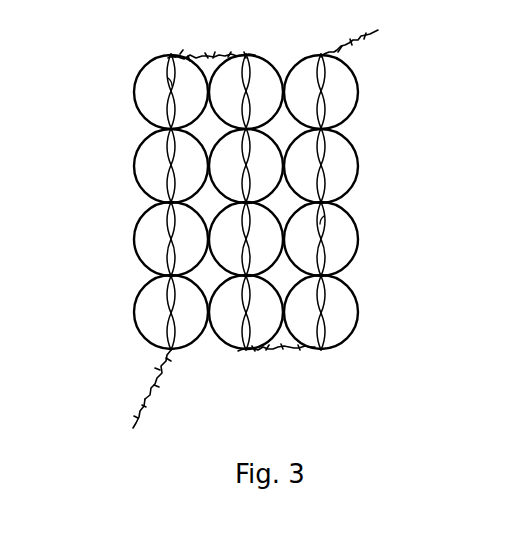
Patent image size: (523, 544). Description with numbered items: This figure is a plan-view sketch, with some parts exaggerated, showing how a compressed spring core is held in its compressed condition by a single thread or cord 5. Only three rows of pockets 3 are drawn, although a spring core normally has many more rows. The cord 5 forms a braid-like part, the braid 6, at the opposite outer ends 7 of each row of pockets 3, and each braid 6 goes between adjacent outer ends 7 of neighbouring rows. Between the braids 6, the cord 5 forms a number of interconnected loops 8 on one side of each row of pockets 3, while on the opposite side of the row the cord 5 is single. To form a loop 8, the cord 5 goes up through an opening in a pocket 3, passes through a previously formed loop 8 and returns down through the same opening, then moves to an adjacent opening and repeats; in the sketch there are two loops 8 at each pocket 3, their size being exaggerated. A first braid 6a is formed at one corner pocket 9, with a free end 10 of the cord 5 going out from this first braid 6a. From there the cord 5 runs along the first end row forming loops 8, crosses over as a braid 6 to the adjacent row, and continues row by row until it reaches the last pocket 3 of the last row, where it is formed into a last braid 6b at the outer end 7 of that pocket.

The pocket 3 is at (148, 162).
The cord 5 is at (170, 222).
The braid 6 is at (222, 52).
The first braid 6a is at (152, 373).
The last braid 6b is at (344, 49).
The outer end 7 is at (170, 56).
The loop 8 is at (172, 82).
The corner pocket 9 is at (148, 305).
The free end 10 is at (134, 418).